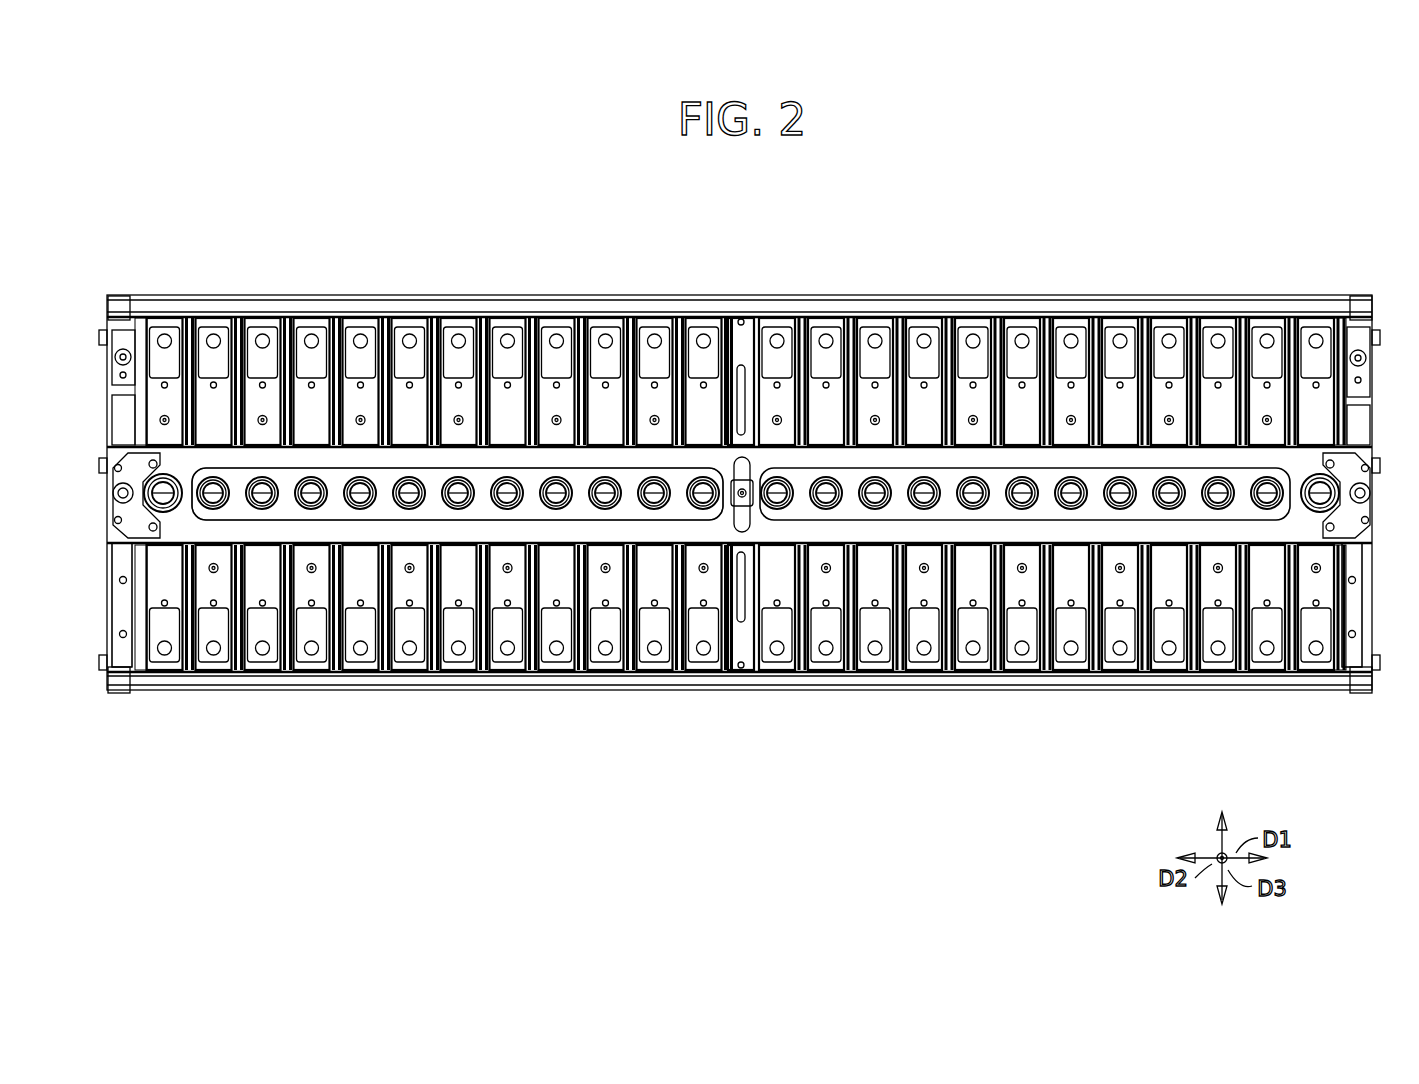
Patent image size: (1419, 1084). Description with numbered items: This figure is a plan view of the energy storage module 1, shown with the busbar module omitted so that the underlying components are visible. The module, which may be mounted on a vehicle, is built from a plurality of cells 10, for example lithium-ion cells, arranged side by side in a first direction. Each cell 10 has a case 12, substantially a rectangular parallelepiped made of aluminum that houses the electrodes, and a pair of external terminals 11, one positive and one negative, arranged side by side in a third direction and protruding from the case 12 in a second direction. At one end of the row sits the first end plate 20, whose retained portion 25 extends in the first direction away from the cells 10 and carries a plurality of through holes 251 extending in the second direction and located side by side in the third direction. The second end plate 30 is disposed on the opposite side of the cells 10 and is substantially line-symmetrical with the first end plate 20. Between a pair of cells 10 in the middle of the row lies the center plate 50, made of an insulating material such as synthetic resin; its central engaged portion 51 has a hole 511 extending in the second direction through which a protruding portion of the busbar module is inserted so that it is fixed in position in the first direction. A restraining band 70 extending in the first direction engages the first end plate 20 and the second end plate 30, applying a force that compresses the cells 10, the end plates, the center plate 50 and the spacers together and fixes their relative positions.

The energy storage module 1 is at (1362, 230).
The cell 10 is at (151, 398).
The external terminal 11 is at (175, 337).
The case 12 is at (170, 676).
The first end plate 20 is at (120, 652).
The retained portion 25 is at (91, 638).
The second end plate 30 is at (1355, 618).
The center plate 50 is at (740, 680).
The central engaged portion 51 is at (457, 494).
The restraining band 70 is at (150, 470).
The through hole 251 is at (118, 580).
The hole 511 is at (743, 625).